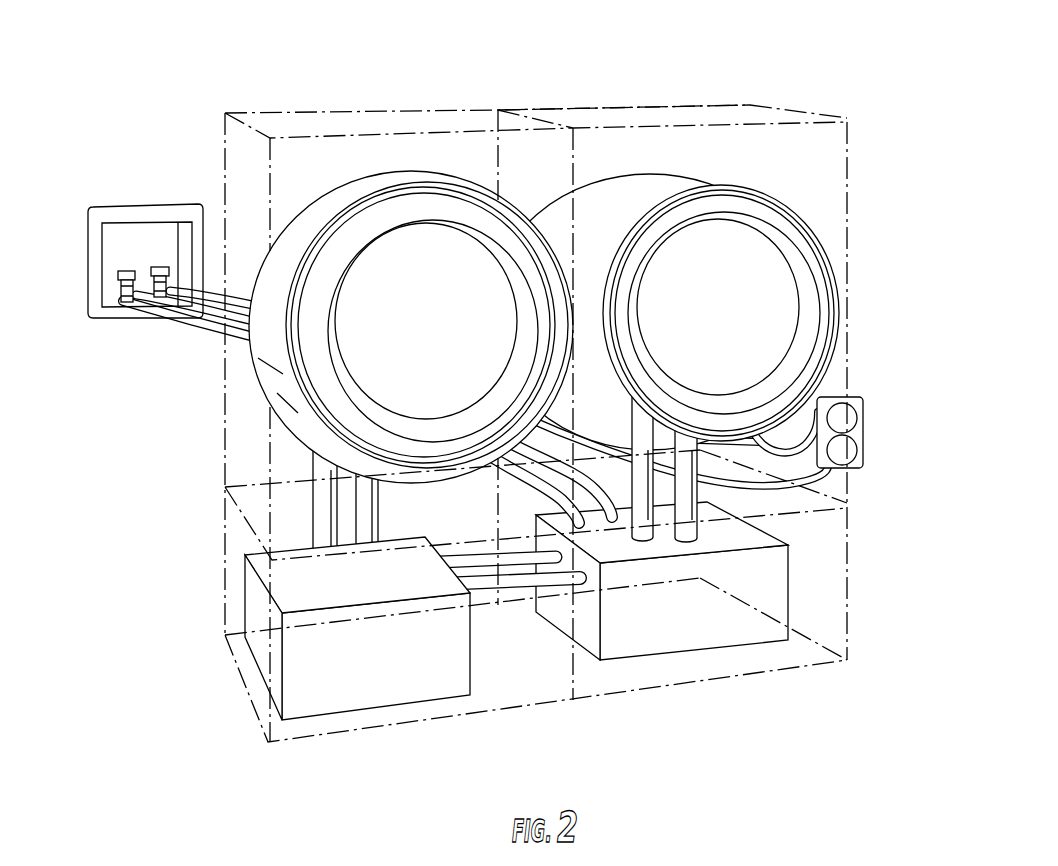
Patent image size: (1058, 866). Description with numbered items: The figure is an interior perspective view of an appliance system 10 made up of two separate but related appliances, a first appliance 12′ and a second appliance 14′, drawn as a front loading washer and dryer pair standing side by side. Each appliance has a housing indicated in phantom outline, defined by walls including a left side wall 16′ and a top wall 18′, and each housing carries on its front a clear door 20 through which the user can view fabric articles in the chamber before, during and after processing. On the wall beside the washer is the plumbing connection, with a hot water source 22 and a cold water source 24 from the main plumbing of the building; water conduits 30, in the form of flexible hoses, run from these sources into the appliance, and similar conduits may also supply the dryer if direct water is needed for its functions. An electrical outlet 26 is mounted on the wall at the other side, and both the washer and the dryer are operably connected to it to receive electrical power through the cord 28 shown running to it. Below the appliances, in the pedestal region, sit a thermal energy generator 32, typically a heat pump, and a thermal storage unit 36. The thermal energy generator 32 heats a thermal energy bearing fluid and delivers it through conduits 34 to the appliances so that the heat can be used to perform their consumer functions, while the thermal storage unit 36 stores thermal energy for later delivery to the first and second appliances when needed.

The appliance system 10 is at (748, 42).
The first appliance 12′ is at (856, 164).
The second appliance 14′ is at (216, 408).
The left side wall 16′ is at (245, 440).
The top wall 18′ is at (355, 126).
The clear door 20 is at (537, 485).
The hot water source 22 is at (160, 266).
The cold water source 24 is at (118, 290).
The electrical outlet 26 is at (863, 438).
The power cord 28 is at (800, 442).
The water conduits 30 is at (213, 290).
The thermal energy generator 32 is at (376, 682).
The conduits 34 is at (320, 540).
The thermal storage unit 36 is at (765, 625).